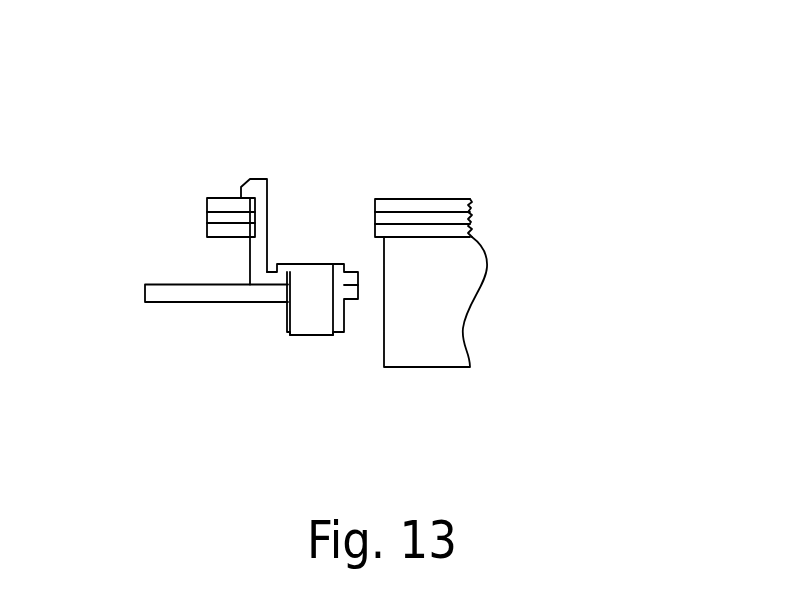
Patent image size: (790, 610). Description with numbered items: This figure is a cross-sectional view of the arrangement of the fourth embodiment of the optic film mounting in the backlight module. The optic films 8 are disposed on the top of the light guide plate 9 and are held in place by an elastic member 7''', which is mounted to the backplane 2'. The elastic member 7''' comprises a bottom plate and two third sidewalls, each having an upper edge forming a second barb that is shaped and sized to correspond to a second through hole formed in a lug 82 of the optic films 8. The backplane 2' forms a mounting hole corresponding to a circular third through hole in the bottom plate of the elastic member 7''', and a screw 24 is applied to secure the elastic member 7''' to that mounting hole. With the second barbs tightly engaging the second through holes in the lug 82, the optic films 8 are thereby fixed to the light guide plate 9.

The backplane 2' is at (216, 347).
The elastic member 7''' is at (161, 232).
The screw 24 is at (310, 303).
The lug 82 is at (319, 214).
The optic films 8 is at (425, 224).
The light guide plate 9 is at (422, 290).